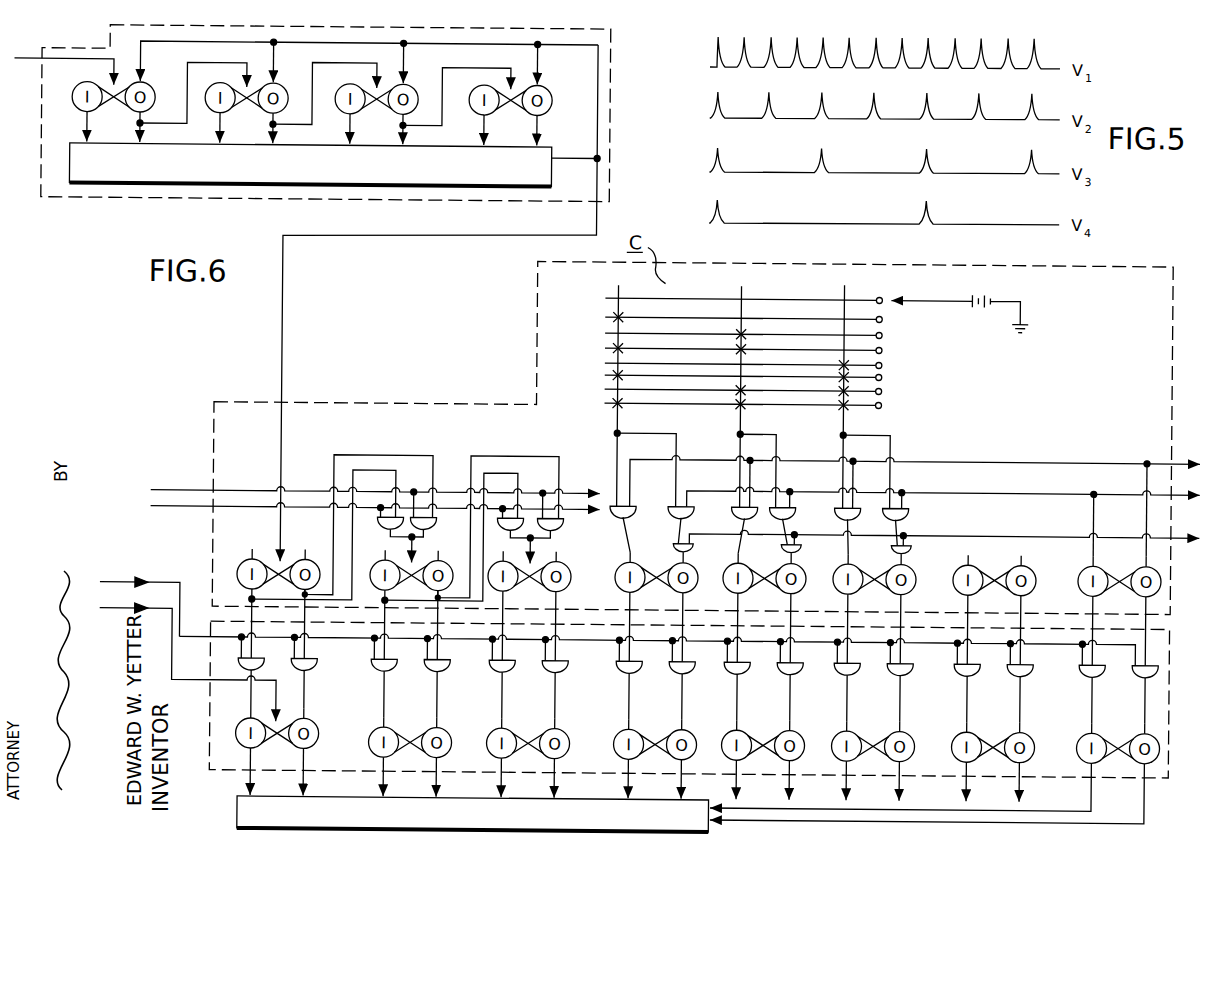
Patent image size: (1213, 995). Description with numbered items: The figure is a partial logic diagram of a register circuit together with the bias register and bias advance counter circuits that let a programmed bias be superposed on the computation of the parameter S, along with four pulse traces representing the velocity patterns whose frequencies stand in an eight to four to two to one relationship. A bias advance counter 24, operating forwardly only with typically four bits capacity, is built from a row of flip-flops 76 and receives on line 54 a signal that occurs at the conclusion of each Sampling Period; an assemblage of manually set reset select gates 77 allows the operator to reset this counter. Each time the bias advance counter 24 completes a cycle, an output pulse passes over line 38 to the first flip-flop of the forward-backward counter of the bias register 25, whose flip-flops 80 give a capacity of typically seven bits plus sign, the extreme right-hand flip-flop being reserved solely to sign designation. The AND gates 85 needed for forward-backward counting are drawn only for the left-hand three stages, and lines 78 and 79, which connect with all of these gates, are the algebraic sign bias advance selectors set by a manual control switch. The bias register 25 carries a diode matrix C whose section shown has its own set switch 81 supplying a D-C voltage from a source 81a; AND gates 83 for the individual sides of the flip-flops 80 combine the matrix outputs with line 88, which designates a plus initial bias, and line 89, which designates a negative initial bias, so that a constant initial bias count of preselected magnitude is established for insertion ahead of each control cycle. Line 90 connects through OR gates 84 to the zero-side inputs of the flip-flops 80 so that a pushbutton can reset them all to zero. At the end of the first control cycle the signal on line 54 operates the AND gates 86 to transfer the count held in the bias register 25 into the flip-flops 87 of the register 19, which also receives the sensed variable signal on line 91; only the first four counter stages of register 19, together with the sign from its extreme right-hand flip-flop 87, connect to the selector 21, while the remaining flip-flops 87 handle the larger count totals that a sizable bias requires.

The register 19 is at (208, 692).
The selector 21 is at (470, 822).
The bias advance counter 24 is at (658, 46).
The bias register 25 is at (748, 259).
The line 38 is at (286, 262).
The line 54 is at (74, 51).
The counter flip-flops 76 is at (552, 83).
The reset select gates 77 is at (305, 174).
The line 78 is at (182, 490).
The line 79 is at (188, 508).
The flip-flops 80 is at (1174, 555).
The set switch 81 is at (911, 300).
The source 81a is at (979, 305).
The AND gates 83 is at (916, 499).
The OR gates 84 is at (916, 537).
The AND gates 85 is at (564, 510).
The AND gates 86 is at (1174, 632).
The flip-flops 87 is at (1174, 722).
The line 88 is at (1071, 460).
The line 89 is at (1163, 490).
The line 90 is at (1163, 532).
The line 91 is at (120, 605).